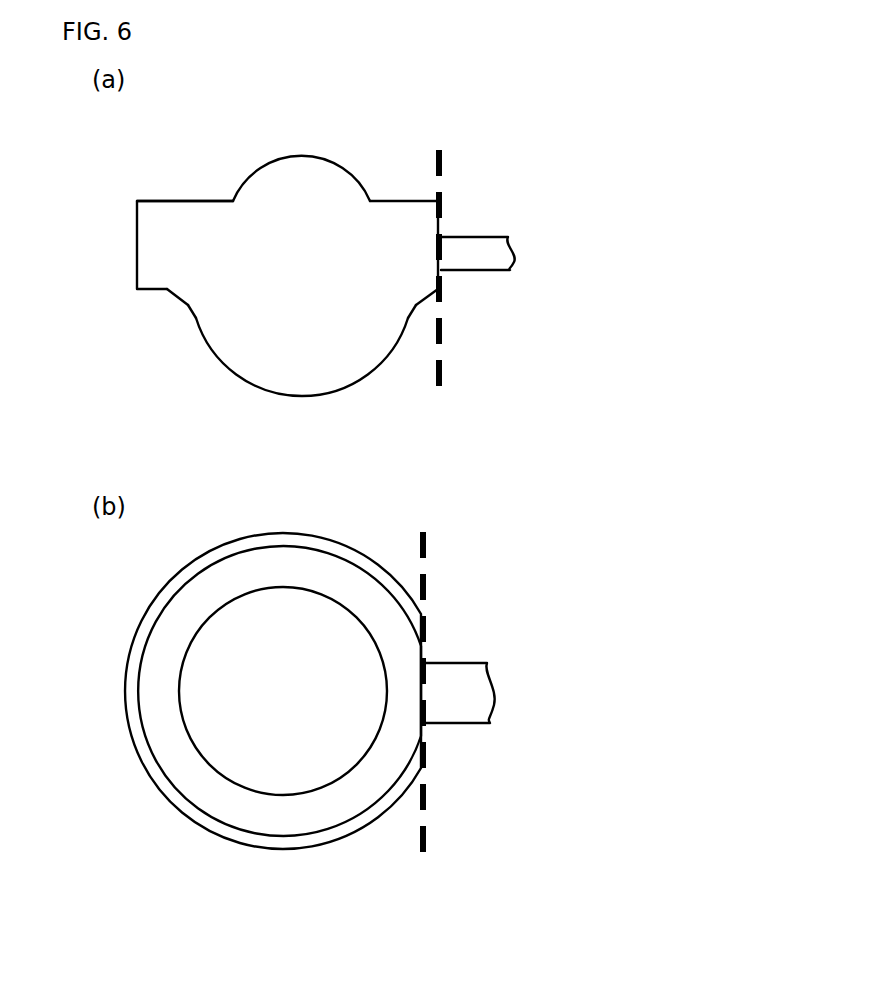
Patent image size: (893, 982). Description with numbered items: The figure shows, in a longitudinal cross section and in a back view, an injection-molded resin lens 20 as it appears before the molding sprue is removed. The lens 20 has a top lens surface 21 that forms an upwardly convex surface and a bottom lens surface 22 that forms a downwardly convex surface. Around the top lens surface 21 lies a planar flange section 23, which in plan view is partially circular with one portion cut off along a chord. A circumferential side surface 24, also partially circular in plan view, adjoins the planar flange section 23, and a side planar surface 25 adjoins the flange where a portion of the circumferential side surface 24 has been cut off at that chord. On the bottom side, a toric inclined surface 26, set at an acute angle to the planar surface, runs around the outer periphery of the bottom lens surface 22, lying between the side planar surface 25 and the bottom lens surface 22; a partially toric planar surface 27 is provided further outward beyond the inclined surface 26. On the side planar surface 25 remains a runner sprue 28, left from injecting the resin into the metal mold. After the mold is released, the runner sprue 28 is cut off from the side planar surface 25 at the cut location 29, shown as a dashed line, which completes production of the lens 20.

The lens 20 is at (305, 508).
The top lens surface 21 is at (317, 157).
The bottom lens surface 22 is at (302, 392).
The planar flange section 23 is at (177, 201).
The circumferential side surface 24 is at (137, 229).
The side planar surface 25 is at (438, 228).
The inclined surface 26 is at (186, 307).
The partially toric planar surface 27 is at (155, 289).
The runner sprue 28 is at (487, 242).
The cut location 29 is at (443, 158).